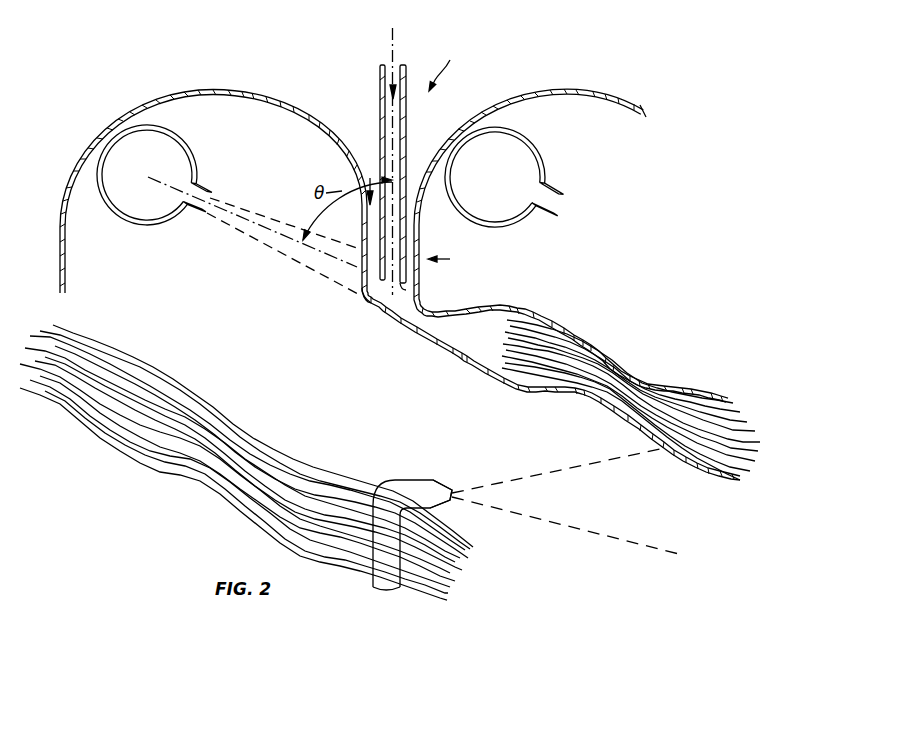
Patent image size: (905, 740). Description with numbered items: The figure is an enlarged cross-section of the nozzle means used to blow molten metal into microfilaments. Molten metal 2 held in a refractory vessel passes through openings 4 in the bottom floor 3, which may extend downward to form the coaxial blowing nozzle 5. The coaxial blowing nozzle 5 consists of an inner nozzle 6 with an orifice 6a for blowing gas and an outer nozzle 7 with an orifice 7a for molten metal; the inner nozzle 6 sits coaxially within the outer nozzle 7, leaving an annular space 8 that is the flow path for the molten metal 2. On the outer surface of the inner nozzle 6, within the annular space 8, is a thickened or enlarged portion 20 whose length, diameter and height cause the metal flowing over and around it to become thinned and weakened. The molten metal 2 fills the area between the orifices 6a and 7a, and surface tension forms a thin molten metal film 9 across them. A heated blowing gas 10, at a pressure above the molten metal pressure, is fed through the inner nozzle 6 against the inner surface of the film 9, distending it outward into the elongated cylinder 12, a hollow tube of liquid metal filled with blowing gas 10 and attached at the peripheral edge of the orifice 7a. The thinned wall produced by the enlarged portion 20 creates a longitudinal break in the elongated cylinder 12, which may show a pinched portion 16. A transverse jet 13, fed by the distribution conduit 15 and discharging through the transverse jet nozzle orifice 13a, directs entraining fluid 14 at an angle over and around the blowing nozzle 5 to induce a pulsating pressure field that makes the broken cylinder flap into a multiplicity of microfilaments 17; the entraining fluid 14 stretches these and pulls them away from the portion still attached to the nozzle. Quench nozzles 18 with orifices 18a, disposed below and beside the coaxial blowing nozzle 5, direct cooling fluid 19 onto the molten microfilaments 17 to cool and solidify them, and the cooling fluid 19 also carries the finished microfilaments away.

The molten metal 2 is at (367, 184).
The bottom floor 3 is at (166, 92).
The openings 4 is at (396, 170).
The coaxial blowing nozzle 5 is at (448, 252).
The inner nozzle 6 is at (406, 215).
The orifice of inner nozzle 6a is at (376, 297).
The outer nozzle 7 is at (420, 277).
The orifice of outer nozzle 7a is at (392, 291).
The annular space 8 is at (408, 245).
The molten metal film 9 is at (411, 289).
The blowing gas 10 is at (397, 150).
The elongated cylinder 12 is at (481, 306).
The transverse jet 13 is at (204, 183).
The transverse jet nozzle orifice 13a is at (219, 198).
The entraining fluid 14 is at (172, 147).
The distribution conduit 15 is at (122, 228).
The pinched portion 16 is at (400, 317).
The microfilaments 17 is at (613, 373).
The quench nozzles 18 is at (419, 515).
The orifices of quench nozzles 18a is at (448, 485).
The cooling fluid 19 is at (527, 479).
The thickened or enlarged portion 20 is at (377, 118).